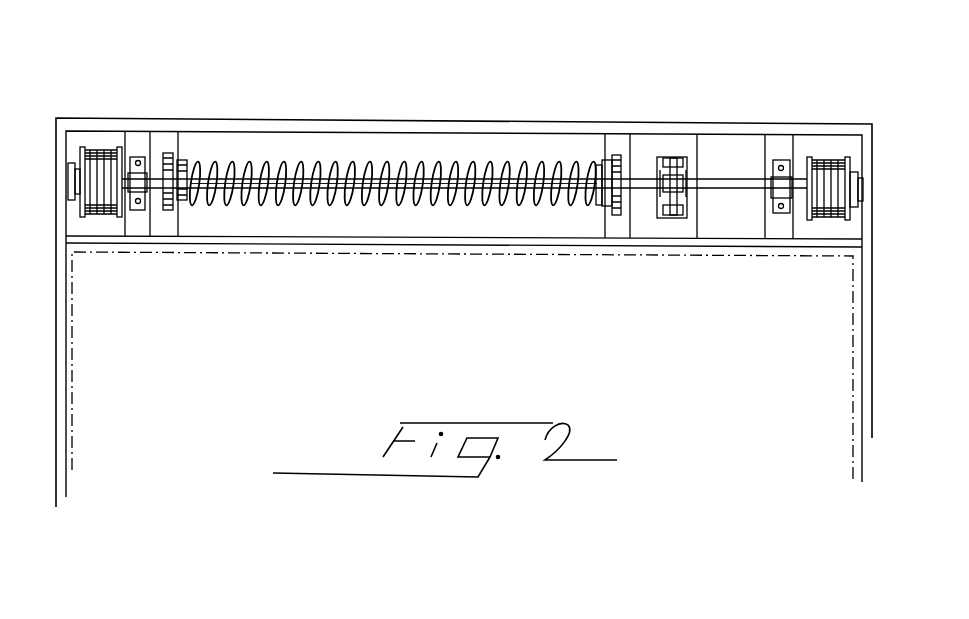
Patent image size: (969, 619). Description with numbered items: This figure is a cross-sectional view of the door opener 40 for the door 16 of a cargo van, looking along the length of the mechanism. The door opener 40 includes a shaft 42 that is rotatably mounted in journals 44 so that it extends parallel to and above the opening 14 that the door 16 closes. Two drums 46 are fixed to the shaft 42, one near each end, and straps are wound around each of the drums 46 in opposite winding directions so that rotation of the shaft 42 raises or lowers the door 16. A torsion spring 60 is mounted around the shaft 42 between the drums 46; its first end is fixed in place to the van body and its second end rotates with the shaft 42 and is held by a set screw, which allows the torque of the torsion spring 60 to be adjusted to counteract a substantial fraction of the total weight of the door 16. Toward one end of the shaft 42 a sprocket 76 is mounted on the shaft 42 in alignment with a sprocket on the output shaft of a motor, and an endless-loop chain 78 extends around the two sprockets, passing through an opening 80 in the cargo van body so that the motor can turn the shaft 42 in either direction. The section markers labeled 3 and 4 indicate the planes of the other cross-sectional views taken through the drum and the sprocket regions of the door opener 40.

The opening 14 is at (72, 300).
The door 16 is at (382, 346).
The section line 3- 3 is at (123, 131).
The section line 4- 4 is at (672, 133).
The door opener 40 is at (408, 138).
The shaft 42 is at (730, 177).
The journals 44 is at (137, 154).
The drums 46 is at (95, 150).
The torsion spring 60 is at (282, 160).
The sprocket 76 is at (688, 167).
The endless-loop chain 78 is at (673, 157).
The opening 80 is at (658, 218).